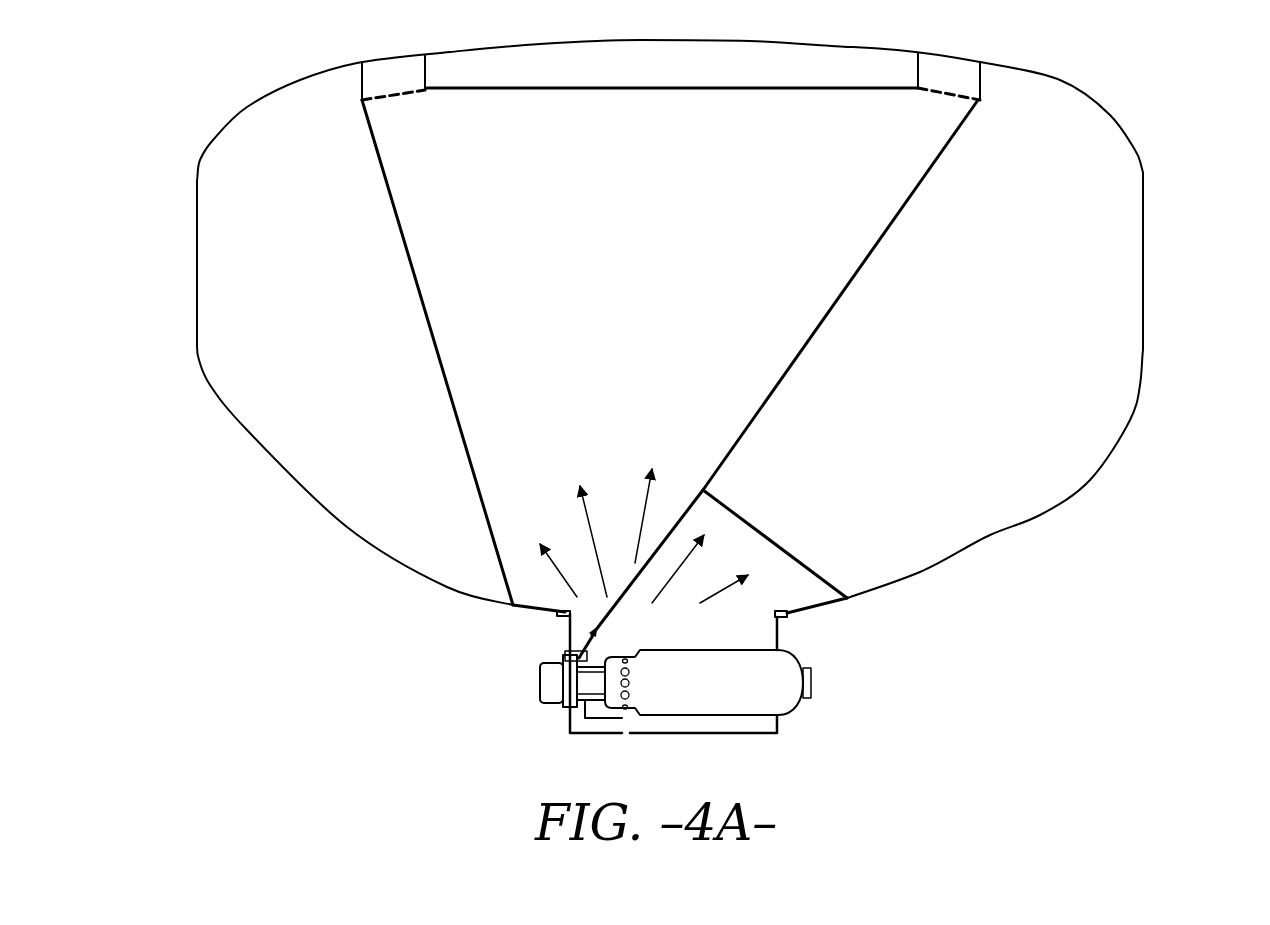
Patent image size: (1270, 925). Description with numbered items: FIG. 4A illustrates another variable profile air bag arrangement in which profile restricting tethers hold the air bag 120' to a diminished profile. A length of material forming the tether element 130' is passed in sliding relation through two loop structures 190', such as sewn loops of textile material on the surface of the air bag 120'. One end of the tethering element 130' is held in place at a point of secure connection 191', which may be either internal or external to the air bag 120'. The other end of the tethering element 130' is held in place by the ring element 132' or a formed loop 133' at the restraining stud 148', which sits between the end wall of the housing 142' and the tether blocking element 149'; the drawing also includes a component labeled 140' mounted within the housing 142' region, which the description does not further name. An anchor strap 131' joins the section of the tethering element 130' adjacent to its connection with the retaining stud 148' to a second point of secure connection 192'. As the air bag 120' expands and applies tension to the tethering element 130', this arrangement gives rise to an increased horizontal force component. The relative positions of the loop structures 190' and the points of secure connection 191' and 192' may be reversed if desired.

The air bag 120' is at (733, 322).
The tether element 130' is at (670, 361).
The anchor strap 131' is at (781, 541).
The ring element 132' is at (512, 687).
The formed loop 133' is at (583, 672).
The ballast 140' is at (753, 683).
The housing 142' is at (732, 735).
The restraining stud 148' is at (525, 704).
The tether blocking element 149' is at (642, 637).
The loop structures 190' is at (676, 58).
The point of secure connection 191' is at (489, 616).
The point of secure connection 192' is at (854, 622).